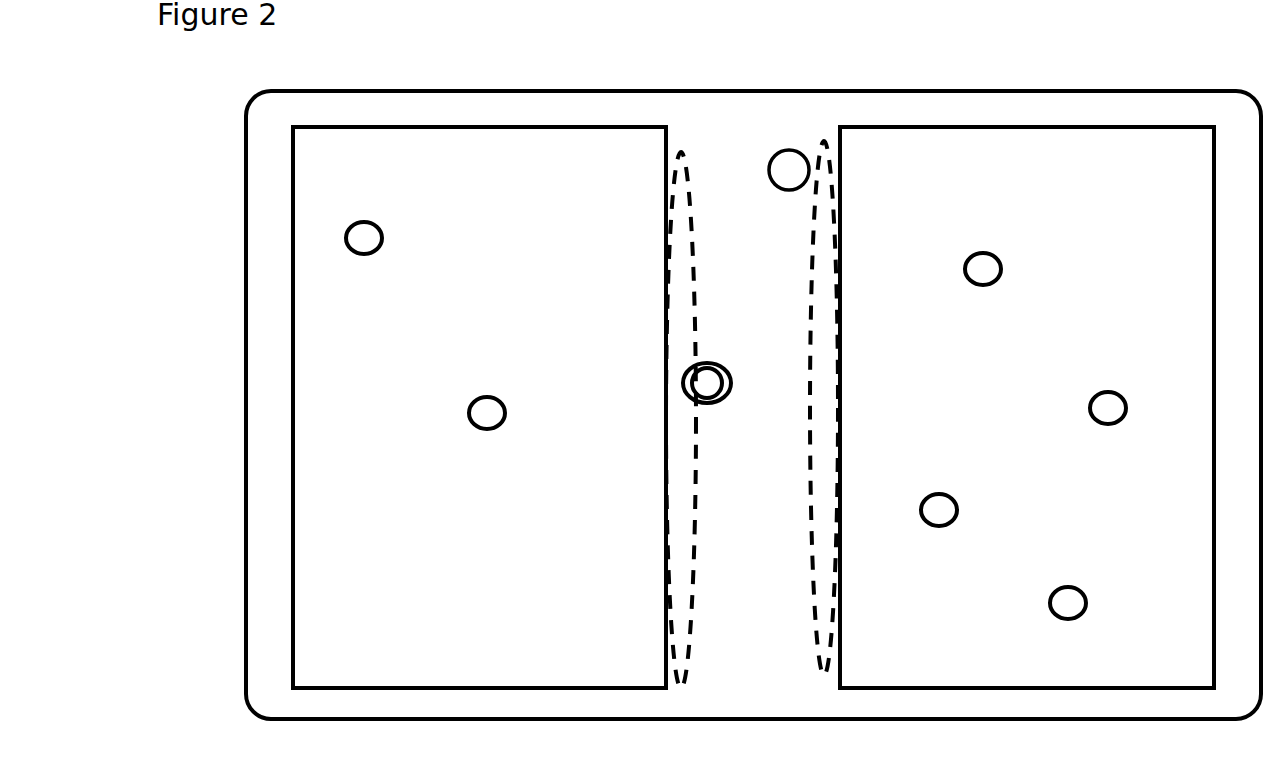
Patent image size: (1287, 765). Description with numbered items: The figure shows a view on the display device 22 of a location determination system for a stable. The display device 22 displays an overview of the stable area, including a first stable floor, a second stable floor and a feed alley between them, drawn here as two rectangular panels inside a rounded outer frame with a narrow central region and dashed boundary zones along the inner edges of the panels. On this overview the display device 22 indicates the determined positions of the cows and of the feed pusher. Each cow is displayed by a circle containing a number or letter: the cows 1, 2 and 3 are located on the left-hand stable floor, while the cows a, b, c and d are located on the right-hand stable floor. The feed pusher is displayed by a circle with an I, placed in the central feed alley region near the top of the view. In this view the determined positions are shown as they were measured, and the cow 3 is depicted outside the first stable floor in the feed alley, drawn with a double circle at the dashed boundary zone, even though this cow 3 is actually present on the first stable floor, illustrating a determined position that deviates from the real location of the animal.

The display device 22 is at (757, 90).
The cow 1 is at (364, 238).
The cow 2 is at (487, 413).
The cow 3 is at (707, 383).
The feed pusher symbol I is at (789, 170).
The cow a is at (983, 269).
The cow b is at (1108, 408).
The cow c is at (939, 510).
The cow d is at (1068, 603).